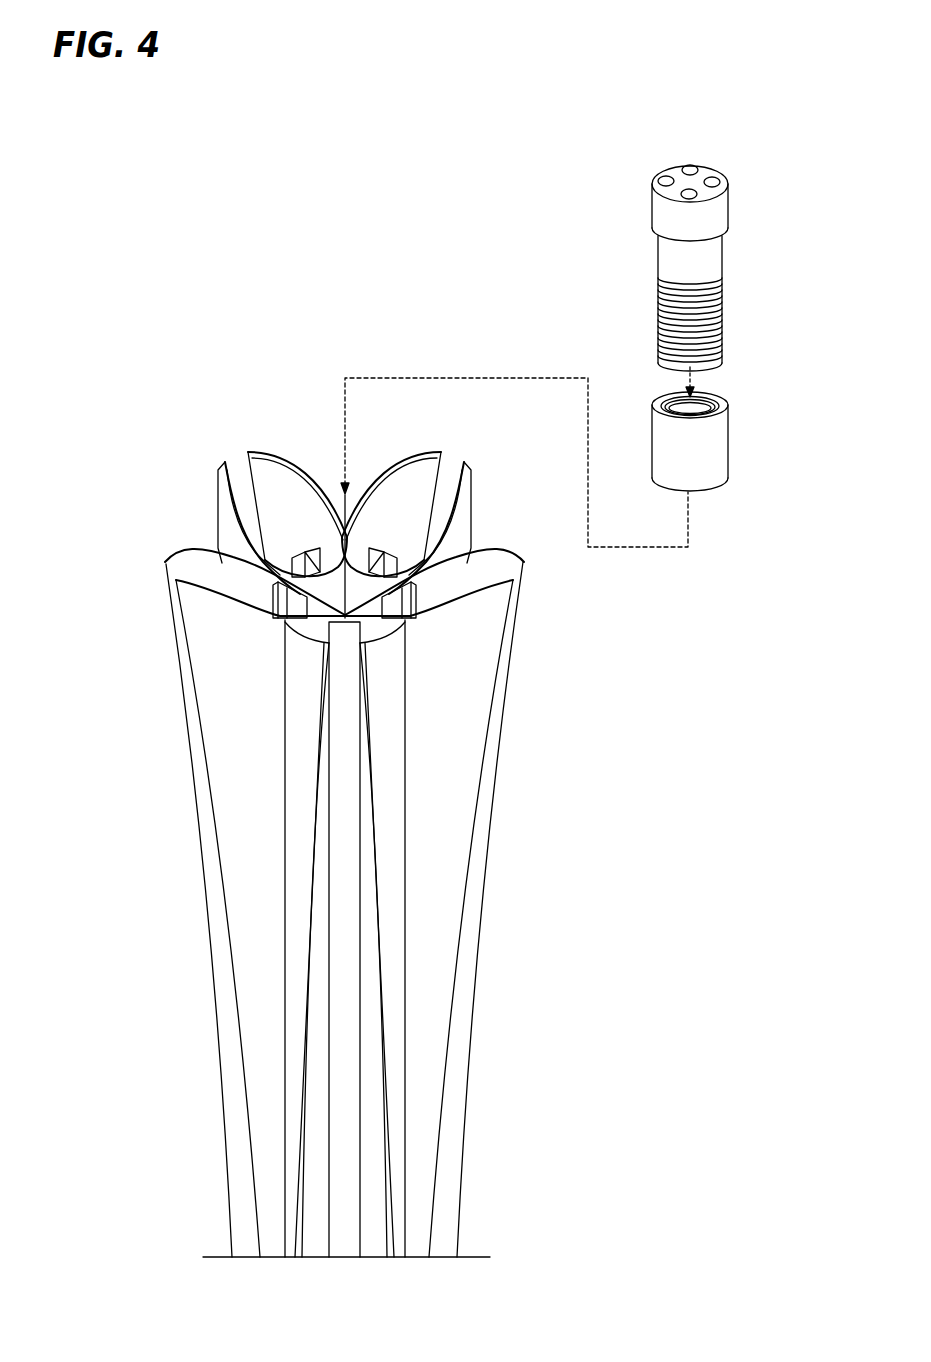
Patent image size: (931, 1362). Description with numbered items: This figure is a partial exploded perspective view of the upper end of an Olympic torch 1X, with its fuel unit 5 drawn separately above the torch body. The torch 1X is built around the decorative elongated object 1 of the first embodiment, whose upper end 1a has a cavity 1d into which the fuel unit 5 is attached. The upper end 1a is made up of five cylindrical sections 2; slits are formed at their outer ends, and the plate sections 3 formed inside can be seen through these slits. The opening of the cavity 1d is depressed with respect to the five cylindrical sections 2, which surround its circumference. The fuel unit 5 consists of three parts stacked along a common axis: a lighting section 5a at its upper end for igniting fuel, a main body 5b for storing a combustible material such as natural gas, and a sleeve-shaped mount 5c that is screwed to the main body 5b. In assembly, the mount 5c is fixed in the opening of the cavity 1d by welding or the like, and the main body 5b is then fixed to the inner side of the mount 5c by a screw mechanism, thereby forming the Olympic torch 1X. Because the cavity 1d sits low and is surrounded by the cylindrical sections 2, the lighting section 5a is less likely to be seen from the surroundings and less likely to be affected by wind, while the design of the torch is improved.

The Olympic torch 1X is at (240, 379).
The decorative elongated object 1 is at (208, 905).
The upper end 1a is at (493, 550).
The cavity 1d is at (330, 582).
The cylindrical sections 2 is at (517, 627).
The plate sections 3 is at (277, 590).
The fuel unit 5 is at (631, 224).
The lighting section 5a is at (728, 212).
The main body 5b is at (723, 337).
The sleeve-shaped mount 5c is at (728, 448).